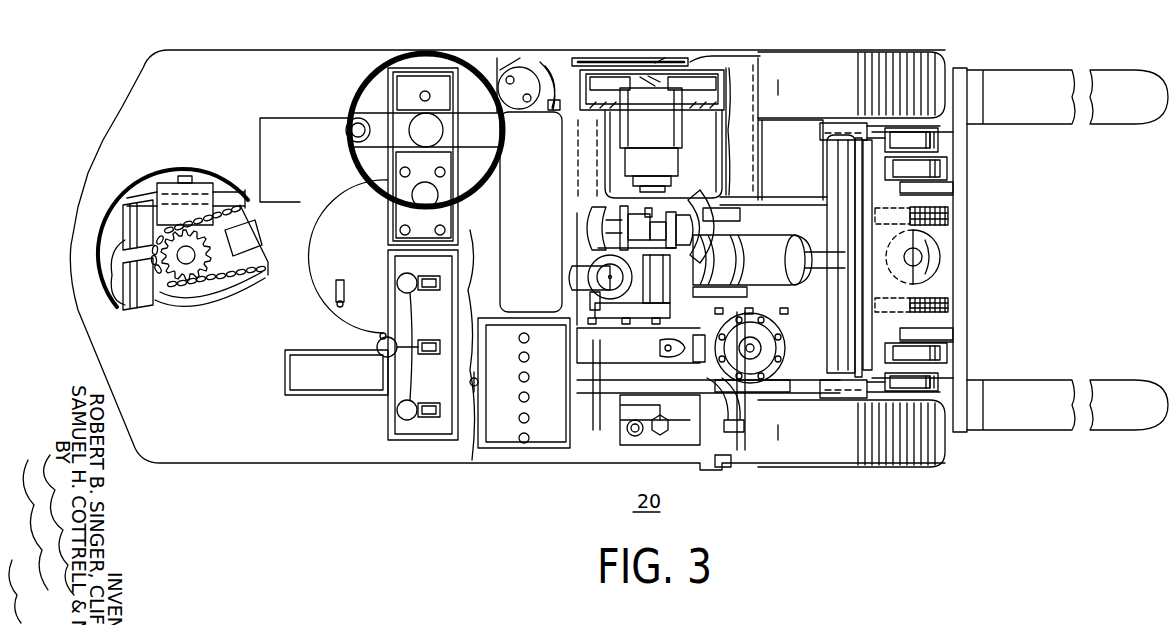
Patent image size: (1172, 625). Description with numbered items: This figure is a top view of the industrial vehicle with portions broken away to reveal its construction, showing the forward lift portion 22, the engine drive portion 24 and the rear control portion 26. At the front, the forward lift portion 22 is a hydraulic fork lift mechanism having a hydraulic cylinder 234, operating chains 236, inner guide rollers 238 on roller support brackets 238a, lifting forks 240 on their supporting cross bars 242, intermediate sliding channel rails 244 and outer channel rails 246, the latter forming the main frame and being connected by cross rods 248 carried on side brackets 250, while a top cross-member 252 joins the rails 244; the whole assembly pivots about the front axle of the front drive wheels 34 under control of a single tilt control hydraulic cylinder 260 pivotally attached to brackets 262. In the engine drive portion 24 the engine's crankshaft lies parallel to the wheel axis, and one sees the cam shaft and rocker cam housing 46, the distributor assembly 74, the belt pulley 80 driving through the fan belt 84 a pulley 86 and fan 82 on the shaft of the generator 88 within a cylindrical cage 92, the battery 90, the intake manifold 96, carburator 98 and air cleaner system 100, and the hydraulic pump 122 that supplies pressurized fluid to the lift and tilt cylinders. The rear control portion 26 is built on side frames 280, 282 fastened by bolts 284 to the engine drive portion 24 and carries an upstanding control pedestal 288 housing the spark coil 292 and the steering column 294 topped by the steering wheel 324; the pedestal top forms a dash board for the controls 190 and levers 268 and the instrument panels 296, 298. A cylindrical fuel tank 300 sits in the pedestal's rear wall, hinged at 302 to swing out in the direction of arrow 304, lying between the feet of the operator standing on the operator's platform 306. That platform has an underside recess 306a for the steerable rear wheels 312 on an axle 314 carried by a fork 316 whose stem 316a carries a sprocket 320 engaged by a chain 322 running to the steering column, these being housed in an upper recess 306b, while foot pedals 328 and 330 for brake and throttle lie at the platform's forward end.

The forward lift portion 22 is at (985, 236).
The engine drive portion 24 is at (788, 368).
The rear control portion 26 is at (297, 474).
The front drive wheels 34 is at (793, 52).
The cam shaft and rocker cam housing 46 is at (528, 130).
The distributor assembly 74 is at (540, 75).
The belt pulley 80 is at (584, 60).
The fan 82 is at (700, 80).
The fan belt 84 is at (622, 58).
The pulley 86 is at (665, 60).
The generator 88 is at (680, 130).
The battery 90 is at (520, 440).
The cylindrical cage 92 is at (715, 165).
The intake manifold 96 is at (585, 222).
The carburator 98 is at (648, 206).
The air cleaner system 100 is at (762, 191).
The hydraulic pump 122 is at (616, 437).
The controls 190 is at (423, 345).
The hydraulic cylinder 234 is at (935, 264).
The operating chains 236 is at (950, 214).
The inner guide rollers 238 is at (925, 184).
The roller support brackets 238a is at (920, 196).
The lifting forks 240 is at (1050, 76).
The supporting cross bars 242 is at (965, 145).
The intermediate sliding channel rails 244 is at (940, 157).
The outer channel rails 246 is at (928, 128).
The cross rods 248 is at (845, 155).
The side brackets 250 is at (840, 124).
The top cross-member 252 is at (945, 296).
The tilt control hydraulic cylinder 260 is at (769, 260).
The brackets 262 is at (740, 222).
The levers 268 is at (409, 348).
The side frame 280 is at (700, 470).
The side frame 282 is at (705, 55).
The bolts 284 is at (726, 468).
The control pedestal 288 is at (422, 295).
The spark coil 292 is at (490, 242).
The steering column 294 is at (424, 122).
The instrument panel 296 is at (440, 92).
The instrument panel 298 is at (400, 210).
The fuel tank 300 is at (304, 228).
The hinge 302 is at (380, 345).
The arrow 304 is at (298, 320).
The operator's platform 306 is at (198, 396).
The enlarged recess 306a is at (125, 265).
The recess 306b is at (236, 283).
The steerable rear wheels 312 is at (133, 288).
The axle 314 is at (183, 176).
The fork 316 is at (165, 210).
The stem 316a is at (192, 268).
The sprocket 320 is at (187, 265).
The chain 322 is at (212, 272).
The steering wheel 324 is at (398, 58).
The foot pedal 328 is at (262, 134).
The foot pedal 330 is at (300, 375).